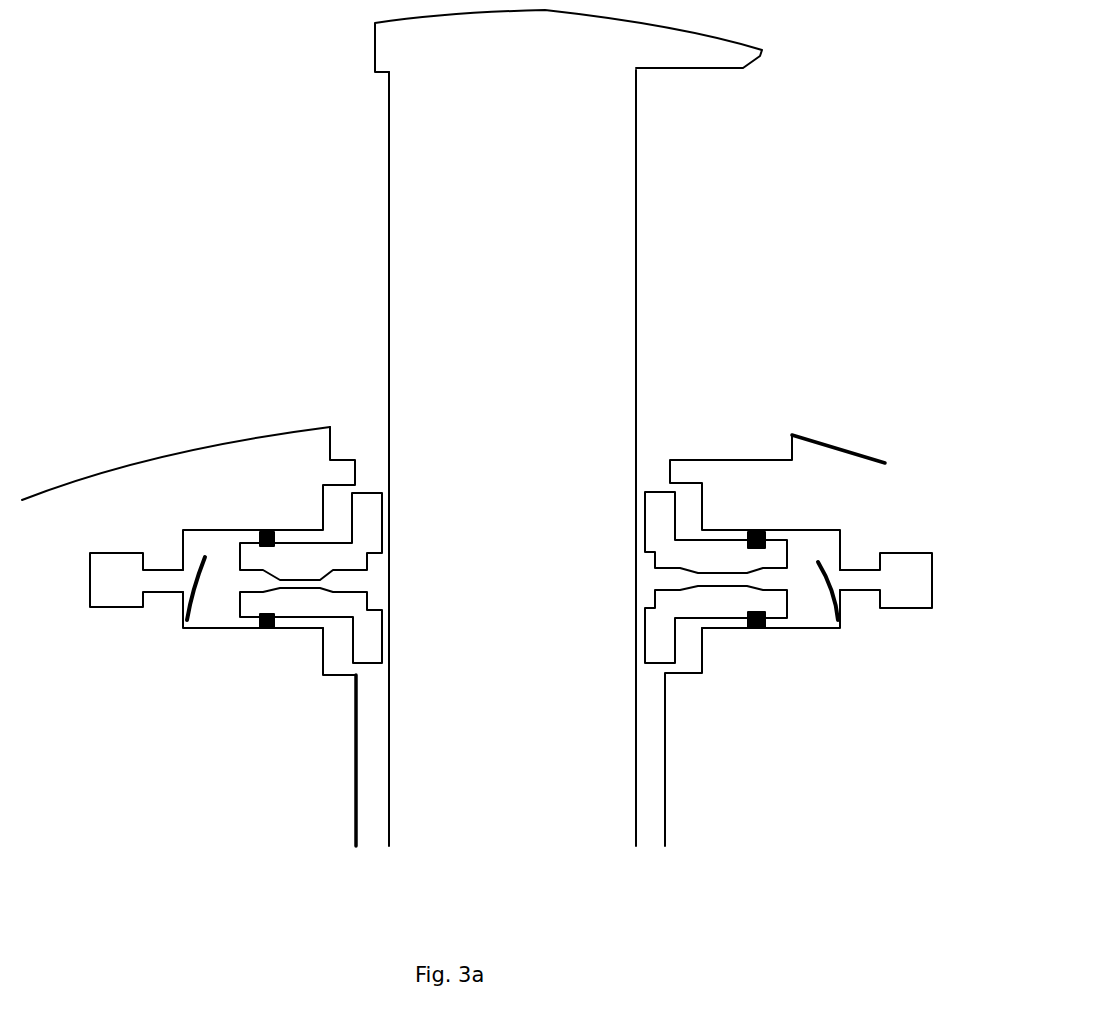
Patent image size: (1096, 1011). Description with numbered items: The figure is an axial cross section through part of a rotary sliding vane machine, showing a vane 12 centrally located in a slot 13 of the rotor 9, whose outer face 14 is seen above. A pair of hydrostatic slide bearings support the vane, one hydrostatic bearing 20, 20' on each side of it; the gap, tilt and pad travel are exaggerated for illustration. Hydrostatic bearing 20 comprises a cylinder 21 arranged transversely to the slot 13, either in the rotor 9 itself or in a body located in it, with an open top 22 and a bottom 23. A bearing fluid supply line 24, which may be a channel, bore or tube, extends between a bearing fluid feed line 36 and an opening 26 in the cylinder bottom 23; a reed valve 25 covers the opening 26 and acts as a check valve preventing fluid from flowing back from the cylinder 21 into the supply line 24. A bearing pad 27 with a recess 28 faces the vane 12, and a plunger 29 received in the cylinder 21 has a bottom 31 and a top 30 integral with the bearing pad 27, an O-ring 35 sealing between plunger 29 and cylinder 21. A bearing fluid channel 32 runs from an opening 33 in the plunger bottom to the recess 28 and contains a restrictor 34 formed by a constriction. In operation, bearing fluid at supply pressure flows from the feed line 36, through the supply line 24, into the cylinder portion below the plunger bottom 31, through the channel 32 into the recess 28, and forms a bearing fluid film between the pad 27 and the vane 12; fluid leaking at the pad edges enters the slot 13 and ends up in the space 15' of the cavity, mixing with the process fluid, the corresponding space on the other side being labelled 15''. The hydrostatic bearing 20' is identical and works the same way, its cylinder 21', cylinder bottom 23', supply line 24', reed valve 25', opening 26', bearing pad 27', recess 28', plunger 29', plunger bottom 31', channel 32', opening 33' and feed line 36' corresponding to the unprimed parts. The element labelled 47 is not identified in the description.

The rotor 9 is at (250, 790).
The vane 12 is at (592, 248).
The slot 13 is at (375, 767).
The outer face 14 is at (205, 440).
The space 15' is at (274, 266).
The second chamber 15'' is at (749, 273).
The hydrostatic bearing 20 is at (345, 422).
The hydrostatic bearing 20' is at (688, 427).
The cylinder 21 is at (269, 565).
The cylinder 21' is at (777, 531).
The open top 22 is at (322, 623).
The bottom 23 is at (165, 552).
The bottom 23' is at (863, 552).
The bearing fluid supply line 24 is at (144, 537).
The bearing fluid supply line 24' is at (893, 532).
The reed valve 25 is at (202, 630).
The reed valve 25' is at (828, 631).
The opening 26 is at (165, 627).
The opening 26' is at (865, 638).
The bearing pad 27 is at (404, 703).
The bearing pad 27' is at (640, 737).
The recess 28 is at (417, 580).
The recess 28' is at (600, 624).
The plunger 29 is at (288, 649).
The plunger 29' is at (716, 588).
The top 30 is at (355, 552).
The bottom 31 is at (299, 571).
The bottom 31' is at (730, 571).
The bearing fluid channel 32 is at (405, 554).
The bearing fluid channel 32' is at (621, 541).
The opening 33 is at (232, 553).
The opening 33' is at (769, 616).
The restrictor 34 is at (295, 580).
The O-ring 35 is at (265, 533).
The bearing fluid feed line 36 is at (132, 619).
The bearing fluid feed line 36' is at (887, 615).
The cover 47 is at (655, 48).